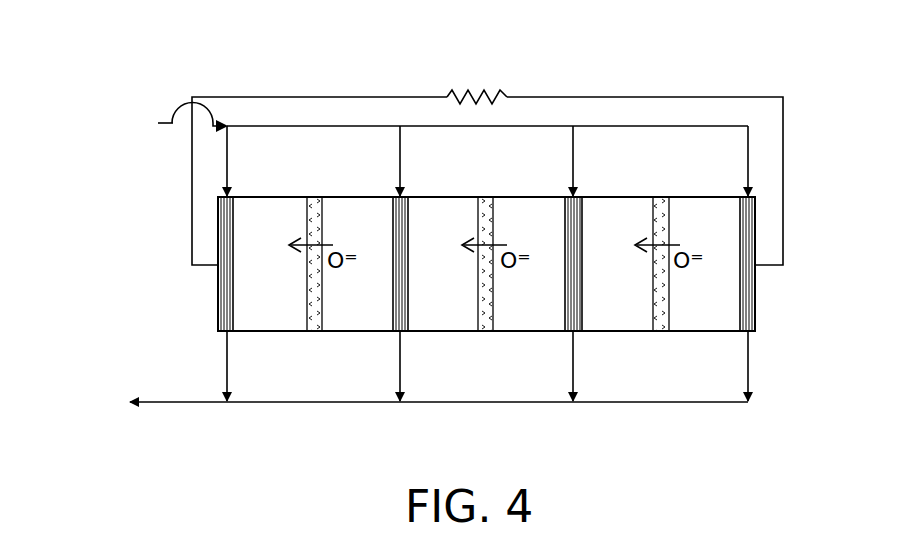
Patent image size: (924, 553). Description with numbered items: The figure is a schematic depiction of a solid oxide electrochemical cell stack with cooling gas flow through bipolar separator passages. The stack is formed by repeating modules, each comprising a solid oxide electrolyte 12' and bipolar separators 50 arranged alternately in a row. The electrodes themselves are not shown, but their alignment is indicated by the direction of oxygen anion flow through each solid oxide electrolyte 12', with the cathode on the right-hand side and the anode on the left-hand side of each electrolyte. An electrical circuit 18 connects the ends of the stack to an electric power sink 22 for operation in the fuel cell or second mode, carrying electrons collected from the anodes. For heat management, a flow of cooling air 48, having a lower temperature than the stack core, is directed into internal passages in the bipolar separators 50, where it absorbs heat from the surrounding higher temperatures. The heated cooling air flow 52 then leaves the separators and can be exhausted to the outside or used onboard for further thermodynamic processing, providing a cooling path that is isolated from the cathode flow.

The electric power sink 22 is at (473, 91).
The electrical circuit 18 is at (783, 163).
The cooling air 48 is at (166, 123).
The bipolar separator 50 is at (748, 297).
The solid oxide electrolyte 12' is at (711, 346).
The cooling air flow 52 is at (187, 402).